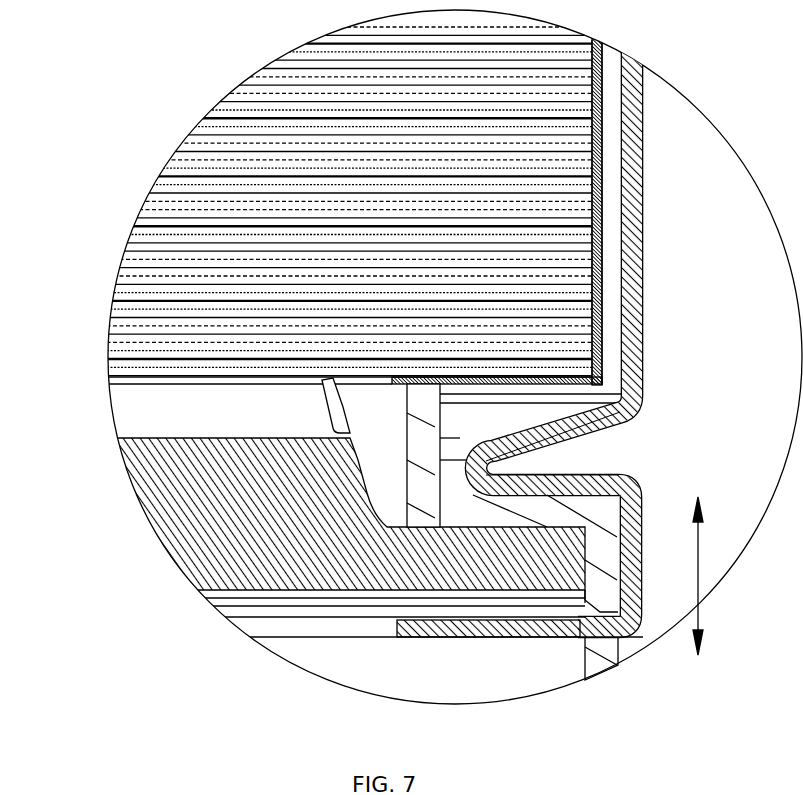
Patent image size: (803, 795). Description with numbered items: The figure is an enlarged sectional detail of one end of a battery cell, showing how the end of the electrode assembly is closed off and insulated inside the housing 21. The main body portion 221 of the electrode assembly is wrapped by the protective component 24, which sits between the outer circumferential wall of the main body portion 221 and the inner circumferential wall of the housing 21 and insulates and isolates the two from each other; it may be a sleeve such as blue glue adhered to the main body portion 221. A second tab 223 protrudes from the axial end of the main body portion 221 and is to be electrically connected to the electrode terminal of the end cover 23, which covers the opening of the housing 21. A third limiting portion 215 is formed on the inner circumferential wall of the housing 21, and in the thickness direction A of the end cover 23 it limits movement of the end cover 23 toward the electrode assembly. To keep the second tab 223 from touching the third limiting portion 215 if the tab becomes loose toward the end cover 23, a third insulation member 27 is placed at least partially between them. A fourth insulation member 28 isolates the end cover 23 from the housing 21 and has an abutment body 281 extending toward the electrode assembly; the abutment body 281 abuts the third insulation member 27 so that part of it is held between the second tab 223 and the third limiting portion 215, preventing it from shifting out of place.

The housing 21 is at (630, 285).
The third limiting portion 215 is at (487, 470).
The main body portion 221 is at (265, 100).
The second tab 223 is at (598, 381).
The end cover 23 is at (205, 535).
The protective component 24 is at (592, 105).
The third insulation member 27 is at (472, 383).
The fourth insulation member 28 is at (610, 593).
The abutment body 281 is at (425, 440).
The thickness direction A is at (690, 576).